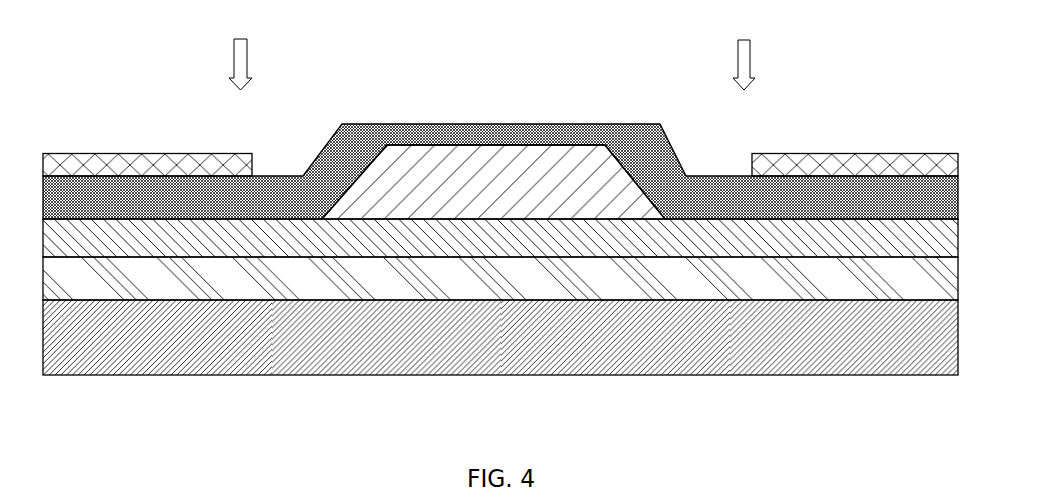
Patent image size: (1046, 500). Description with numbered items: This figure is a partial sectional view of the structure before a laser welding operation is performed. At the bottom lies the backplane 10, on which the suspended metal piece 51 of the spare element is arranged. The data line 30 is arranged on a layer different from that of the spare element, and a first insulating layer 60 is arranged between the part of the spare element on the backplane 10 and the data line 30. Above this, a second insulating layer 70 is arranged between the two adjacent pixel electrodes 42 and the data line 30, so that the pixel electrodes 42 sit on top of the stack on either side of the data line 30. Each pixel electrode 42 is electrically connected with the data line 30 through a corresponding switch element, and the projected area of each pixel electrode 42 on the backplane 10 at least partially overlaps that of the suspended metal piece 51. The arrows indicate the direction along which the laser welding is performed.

The backplane 10 is at (393, 352).
The suspended metal piece 51 is at (553, 284).
The first insulating layer 60 is at (713, 238).
The second insulating layer 70 is at (643, 148).
The data line 30 is at (485, 185).
The pixel electrode 42 is at (108, 168).